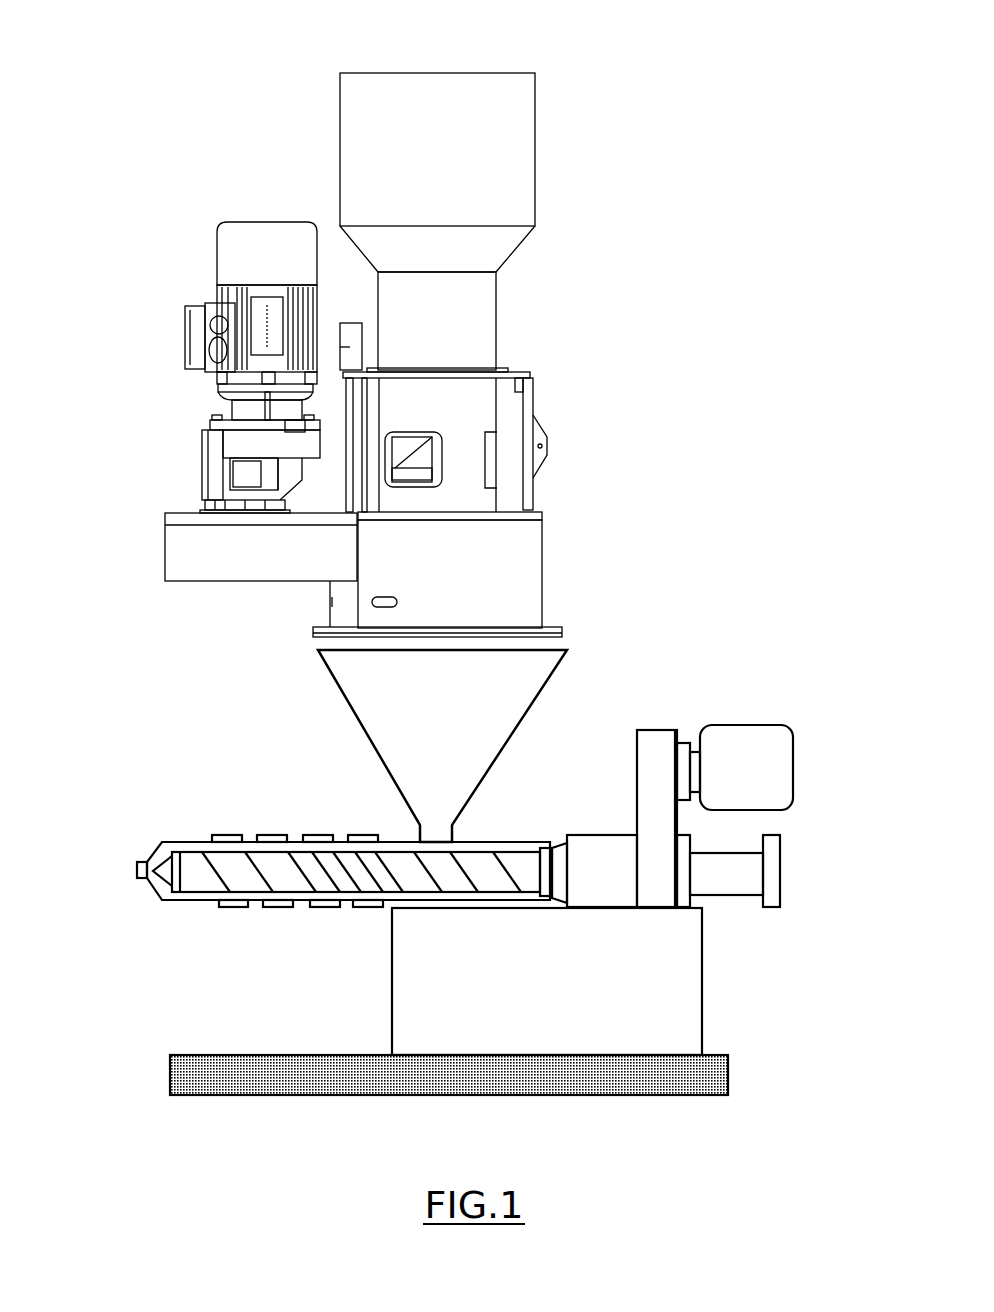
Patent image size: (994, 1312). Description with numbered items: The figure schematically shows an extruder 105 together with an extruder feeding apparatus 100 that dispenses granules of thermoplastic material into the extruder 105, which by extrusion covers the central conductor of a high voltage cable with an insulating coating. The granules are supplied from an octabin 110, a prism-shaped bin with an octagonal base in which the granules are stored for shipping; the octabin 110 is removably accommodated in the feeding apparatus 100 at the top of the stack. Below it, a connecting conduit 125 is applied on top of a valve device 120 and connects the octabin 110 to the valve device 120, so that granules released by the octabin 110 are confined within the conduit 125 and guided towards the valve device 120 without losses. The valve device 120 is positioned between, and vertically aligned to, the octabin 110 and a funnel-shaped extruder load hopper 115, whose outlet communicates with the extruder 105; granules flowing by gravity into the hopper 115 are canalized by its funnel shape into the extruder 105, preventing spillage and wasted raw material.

The extruder feeding apparatus 100 is at (237, 60).
The extruder 105 is at (222, 815).
The octabin 110 is at (531, 143).
The extruder load hopper 115 is at (528, 700).
The valve device 120 is at (566, 387).
The connecting conduit 125 is at (545, 300).